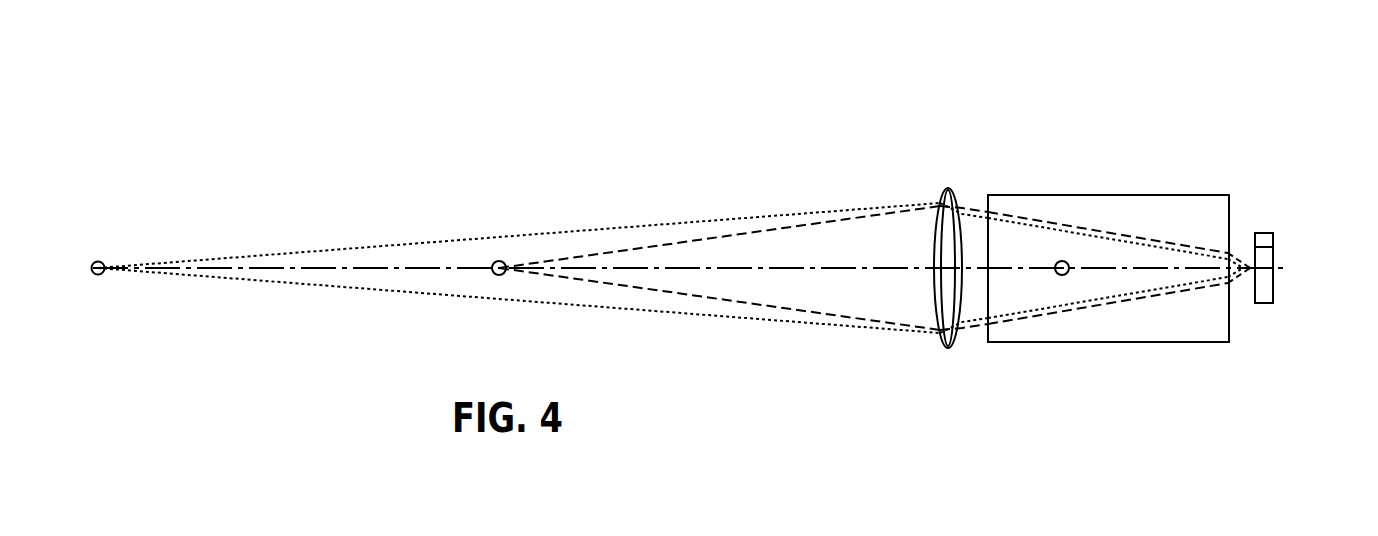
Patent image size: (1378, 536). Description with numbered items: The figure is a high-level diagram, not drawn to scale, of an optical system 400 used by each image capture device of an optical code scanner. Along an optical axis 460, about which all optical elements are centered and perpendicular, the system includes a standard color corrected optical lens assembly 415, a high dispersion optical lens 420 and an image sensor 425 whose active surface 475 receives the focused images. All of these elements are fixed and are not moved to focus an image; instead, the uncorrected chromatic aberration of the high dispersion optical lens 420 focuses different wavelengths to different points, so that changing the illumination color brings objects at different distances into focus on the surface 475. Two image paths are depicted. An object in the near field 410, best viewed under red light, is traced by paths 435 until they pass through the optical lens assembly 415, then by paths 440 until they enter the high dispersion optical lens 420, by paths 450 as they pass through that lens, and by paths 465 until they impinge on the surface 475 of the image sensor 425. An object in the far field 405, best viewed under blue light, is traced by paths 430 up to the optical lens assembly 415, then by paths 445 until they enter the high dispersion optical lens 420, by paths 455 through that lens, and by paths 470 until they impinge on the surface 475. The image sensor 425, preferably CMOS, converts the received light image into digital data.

The optical system 400 is at (184, 76).
The far field 405 is at (99, 261).
The near field 410 is at (497, 261).
The optical lens assembly 415 is at (945, 347).
The high dispersion optical lens 420 is at (1160, 207).
The image sensor 425 is at (1263, 288).
The paths 430 is at (265, 282).
The paths 435 is at (633, 248).
The paths 440 is at (971, 209).
The paths 445 is at (976, 218).
The paths 450 is at (1023, 222).
The paths 455 is at (1128, 245).
The optical axis 460 is at (1062, 261).
The paths 465 is at (1243, 265).
The paths 470 is at (1238, 255).
The active surface 475 is at (1259, 247).